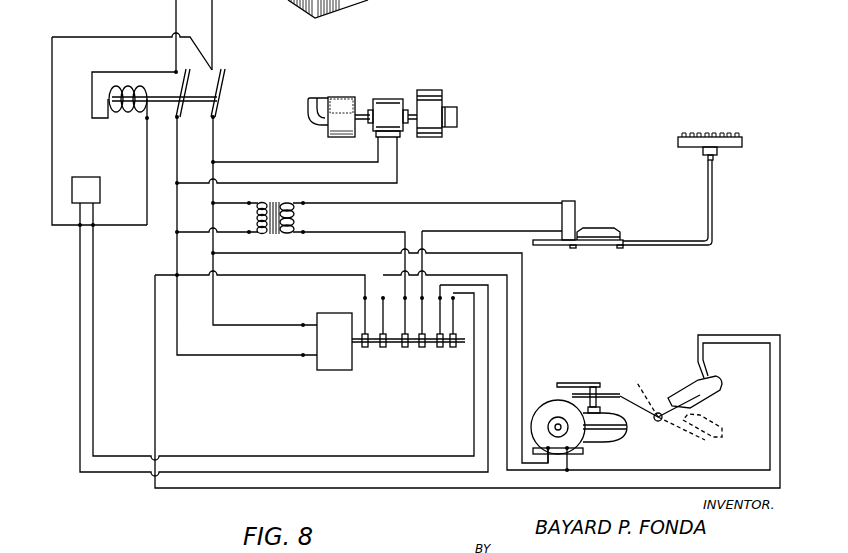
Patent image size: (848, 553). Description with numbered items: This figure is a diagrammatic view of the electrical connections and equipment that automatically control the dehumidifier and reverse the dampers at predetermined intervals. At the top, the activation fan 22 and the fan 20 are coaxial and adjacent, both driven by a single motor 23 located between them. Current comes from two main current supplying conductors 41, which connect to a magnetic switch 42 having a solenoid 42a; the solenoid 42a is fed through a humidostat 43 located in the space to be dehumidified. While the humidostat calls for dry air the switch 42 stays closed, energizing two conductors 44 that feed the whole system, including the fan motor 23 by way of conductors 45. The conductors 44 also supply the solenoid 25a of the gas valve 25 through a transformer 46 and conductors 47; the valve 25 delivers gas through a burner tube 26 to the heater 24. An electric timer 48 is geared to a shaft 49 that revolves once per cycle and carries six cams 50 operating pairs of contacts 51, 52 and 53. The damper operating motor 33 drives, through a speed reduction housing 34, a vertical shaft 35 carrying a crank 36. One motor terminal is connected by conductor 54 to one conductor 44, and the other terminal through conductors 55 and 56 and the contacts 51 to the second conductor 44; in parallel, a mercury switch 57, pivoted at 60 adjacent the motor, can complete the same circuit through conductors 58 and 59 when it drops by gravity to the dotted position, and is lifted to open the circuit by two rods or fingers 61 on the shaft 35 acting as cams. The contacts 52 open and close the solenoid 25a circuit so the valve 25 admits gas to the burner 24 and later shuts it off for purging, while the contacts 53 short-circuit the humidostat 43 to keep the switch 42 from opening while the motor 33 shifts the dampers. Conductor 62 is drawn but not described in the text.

The fan 20 is at (426, 91).
The activation fan 22 is at (357, 84).
The motor 23 is at (402, 85).
The heater 24 is at (684, 148).
The gas valve 25 is at (612, 212).
The solenoid 25a is at (576, 191).
The burner tube 26 is at (708, 188).
The damper operating motor 33 is at (545, 408).
The speed reduction housing 34 is at (600, 440).
The vertical shaft 35 is at (617, 400).
The crank 36 is at (593, 387).
The main current supplying conductors 41 is at (212, 26).
The magnetic switch 42 is at (224, 85).
The solenoid 42a is at (124, 118).
The humidostat 43 is at (96, 186).
The conductors 44 is at (180, 130).
The conductors 45 is at (346, 182).
The transformer 46 is at (289, 205).
The conductors 47 is at (441, 231).
The electric timer 48 is at (331, 313).
The shaft 49 is at (356, 347).
The cams 50 is at (405, 347).
The contacts 51 is at (366, 325).
The contacts 52 is at (420, 326).
The contacts 53 is at (454, 347).
The conductor 54 is at (522, 320).
The conductor 55 is at (507, 344).
The conductor 56 is at (275, 277).
The mercury switch 57 is at (718, 370).
The conductor 58 is at (770, 385).
The conductor 59 is at (780, 388).
The pivot 60 is at (659, 421).
The rods or fingers 61 is at (580, 383).
The conductor 62 is at (490, 372).